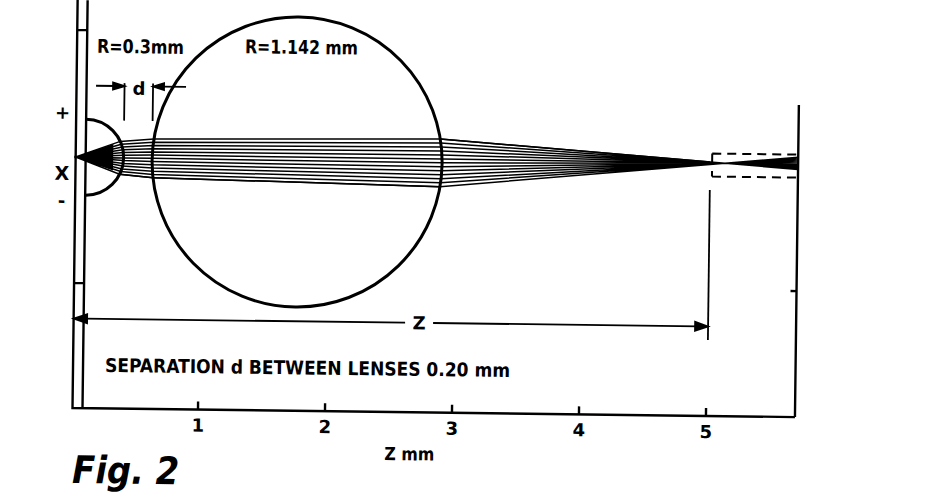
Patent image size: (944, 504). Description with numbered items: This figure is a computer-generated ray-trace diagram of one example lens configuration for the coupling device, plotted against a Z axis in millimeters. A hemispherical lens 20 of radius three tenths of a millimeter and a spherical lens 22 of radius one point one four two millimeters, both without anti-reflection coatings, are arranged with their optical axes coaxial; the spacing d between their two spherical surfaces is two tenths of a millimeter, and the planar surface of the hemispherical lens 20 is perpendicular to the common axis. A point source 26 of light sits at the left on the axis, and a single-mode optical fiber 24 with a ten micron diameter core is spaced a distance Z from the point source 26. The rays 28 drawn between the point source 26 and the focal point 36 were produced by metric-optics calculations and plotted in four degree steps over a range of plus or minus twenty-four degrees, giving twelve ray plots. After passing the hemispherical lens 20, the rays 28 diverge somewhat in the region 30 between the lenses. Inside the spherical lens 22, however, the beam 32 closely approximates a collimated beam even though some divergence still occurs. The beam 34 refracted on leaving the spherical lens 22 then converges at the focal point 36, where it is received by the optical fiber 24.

The hemispherical lens 20 is at (101, 190).
The spherical lens 22 is at (424, 223).
The single-mode optical fiber 24 is at (713, 146).
The point source 26 is at (72, 157).
The rays 28 is at (303, 124).
The region 30 is at (134, 184).
The beam 32 is at (268, 181).
The beam 34 is at (518, 139).
The focal point 36 is at (705, 158).